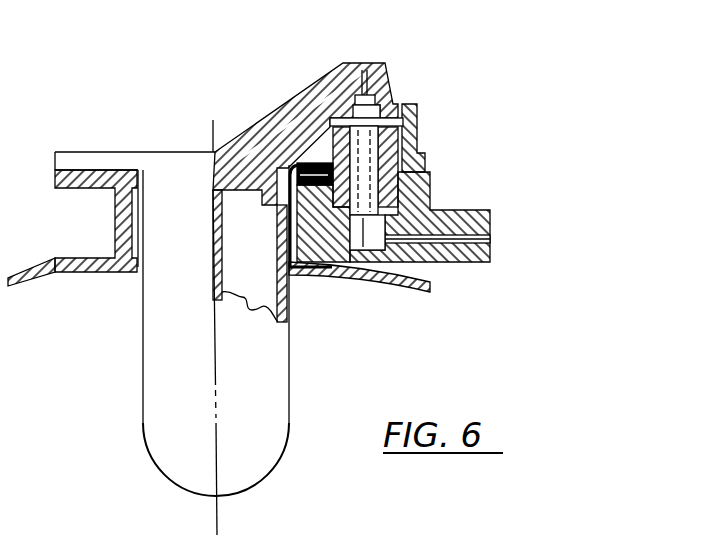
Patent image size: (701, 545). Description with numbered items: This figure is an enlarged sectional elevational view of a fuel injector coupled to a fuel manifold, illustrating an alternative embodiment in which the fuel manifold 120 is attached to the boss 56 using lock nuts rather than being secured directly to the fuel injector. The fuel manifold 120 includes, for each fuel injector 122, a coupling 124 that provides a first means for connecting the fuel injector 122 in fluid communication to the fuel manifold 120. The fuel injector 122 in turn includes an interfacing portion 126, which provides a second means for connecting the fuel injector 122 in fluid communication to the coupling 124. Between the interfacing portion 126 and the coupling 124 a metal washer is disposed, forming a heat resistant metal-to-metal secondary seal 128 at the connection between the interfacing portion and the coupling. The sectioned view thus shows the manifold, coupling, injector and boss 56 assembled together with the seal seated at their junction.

The fuel manifold 120 is at (499, 220).
The fuel injector 122 is at (193, 128).
The coupling 124 is at (430, 195).
The interfacing portion 126 is at (357, 63).
The secondary seal 128 is at (432, 163).
The boss 56 is at (113, 217).